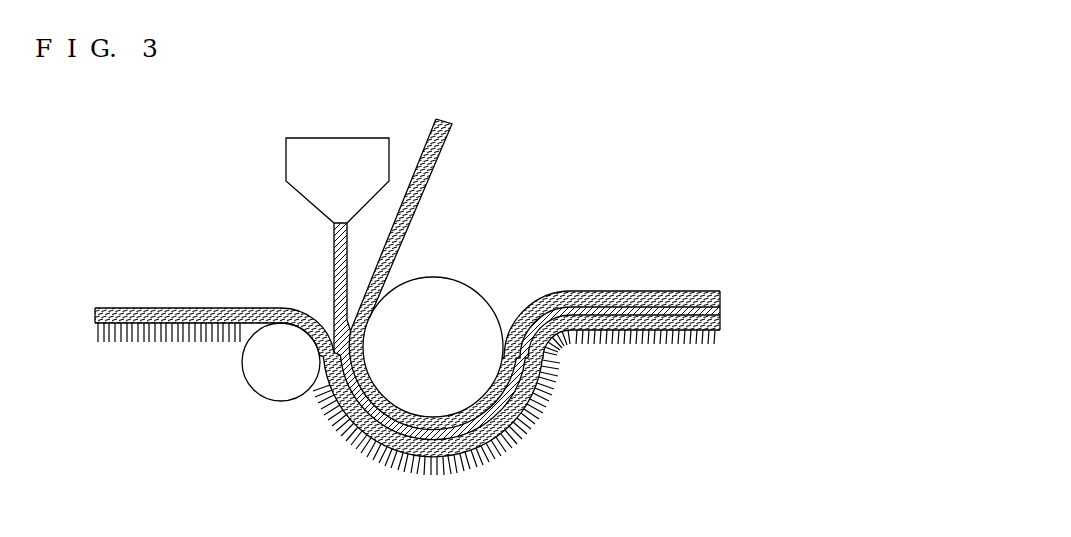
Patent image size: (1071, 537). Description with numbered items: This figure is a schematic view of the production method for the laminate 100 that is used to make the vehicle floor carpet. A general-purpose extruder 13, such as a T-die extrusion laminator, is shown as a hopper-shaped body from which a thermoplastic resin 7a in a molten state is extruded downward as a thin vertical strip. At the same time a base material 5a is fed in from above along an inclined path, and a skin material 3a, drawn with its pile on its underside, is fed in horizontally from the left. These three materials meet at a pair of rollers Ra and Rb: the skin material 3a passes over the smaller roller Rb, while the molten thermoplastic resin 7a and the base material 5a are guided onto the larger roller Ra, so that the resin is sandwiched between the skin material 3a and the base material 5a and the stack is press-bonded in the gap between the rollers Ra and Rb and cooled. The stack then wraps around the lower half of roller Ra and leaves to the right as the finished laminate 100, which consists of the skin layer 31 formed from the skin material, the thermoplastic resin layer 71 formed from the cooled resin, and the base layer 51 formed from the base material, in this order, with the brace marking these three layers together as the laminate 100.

The extruder 13 is at (293, 164).
The thermoplastic resin 7a is at (334, 263).
The base material 5a is at (441, 155).
The roller Ra is at (483, 295).
The roller Rb is at (268, 392).
The skin material 3a is at (127, 325).
The base layer 51 is at (721, 294).
The thermoplastic resin layer 71 is at (721, 309).
The skin layer 31 is at (721, 330).
The laminate 100 is at (798, 247).